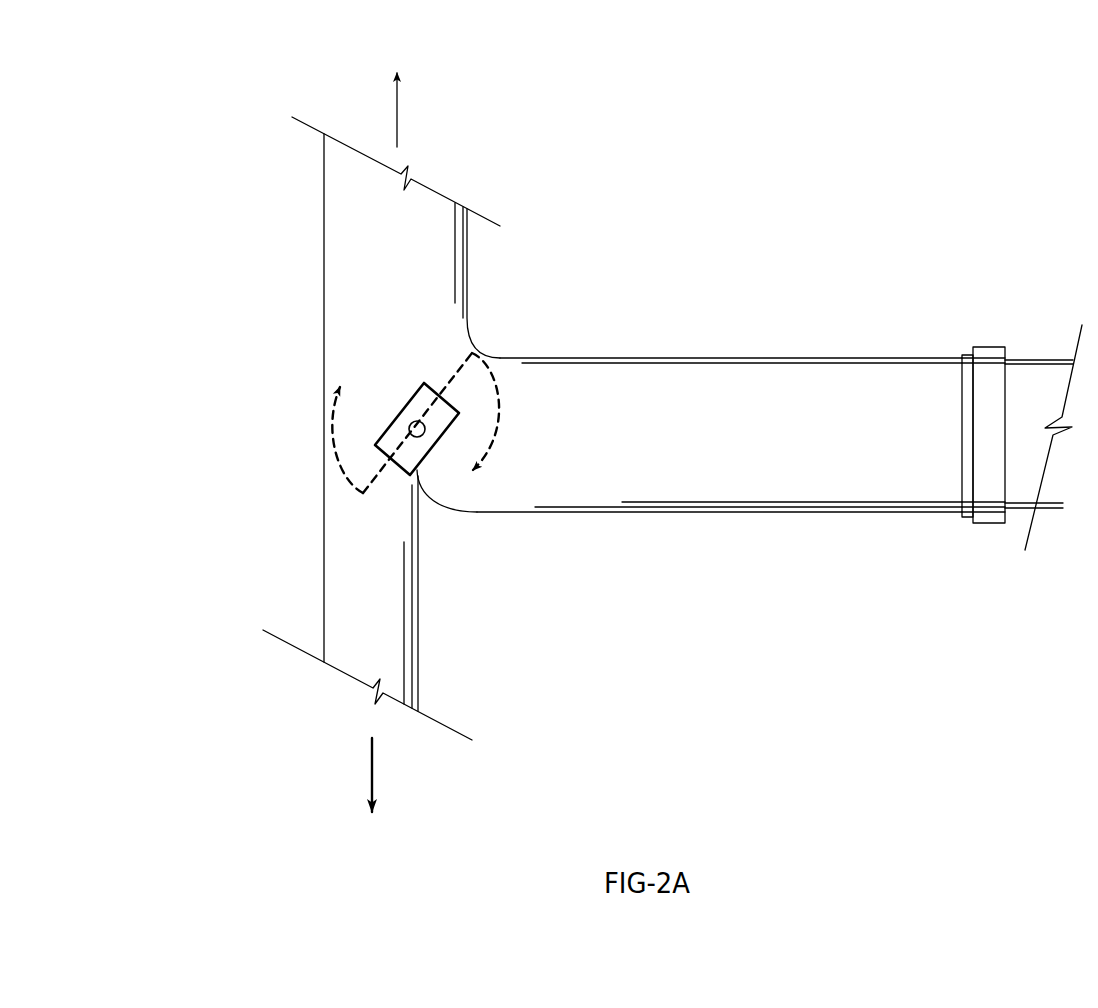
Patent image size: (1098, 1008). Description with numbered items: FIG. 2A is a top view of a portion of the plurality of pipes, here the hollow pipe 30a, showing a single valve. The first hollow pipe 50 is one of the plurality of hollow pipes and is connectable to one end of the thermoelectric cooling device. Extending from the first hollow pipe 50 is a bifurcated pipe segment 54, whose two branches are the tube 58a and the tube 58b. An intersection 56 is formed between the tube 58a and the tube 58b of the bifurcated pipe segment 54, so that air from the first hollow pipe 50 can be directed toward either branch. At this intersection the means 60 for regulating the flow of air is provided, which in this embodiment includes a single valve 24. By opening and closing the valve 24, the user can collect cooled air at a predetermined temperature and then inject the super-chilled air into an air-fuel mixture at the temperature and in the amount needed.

The valve 24 is at (312, 417).
The hollow pipe 30a is at (762, 274).
The first hollow pipe 50 is at (833, 515).
The bifurcated pipe segment 54 is at (305, 498).
The intersection 56 is at (425, 500).
The tube 58a is at (496, 356).
The tube 58b is at (418, 639).
The means for regulating the flow of air 60 is at (417, 405).